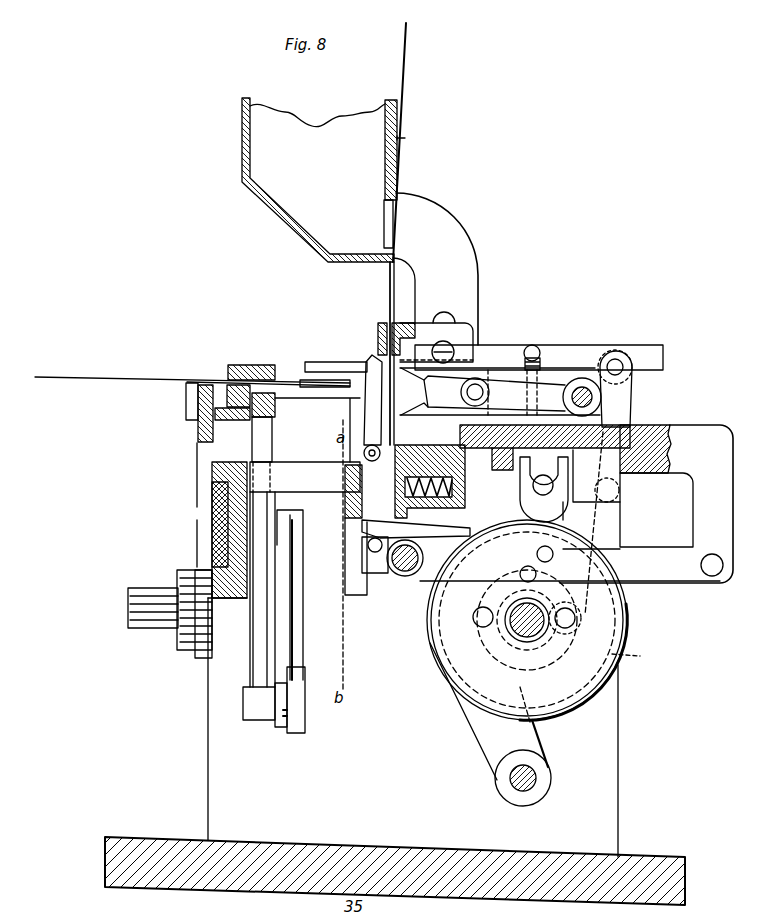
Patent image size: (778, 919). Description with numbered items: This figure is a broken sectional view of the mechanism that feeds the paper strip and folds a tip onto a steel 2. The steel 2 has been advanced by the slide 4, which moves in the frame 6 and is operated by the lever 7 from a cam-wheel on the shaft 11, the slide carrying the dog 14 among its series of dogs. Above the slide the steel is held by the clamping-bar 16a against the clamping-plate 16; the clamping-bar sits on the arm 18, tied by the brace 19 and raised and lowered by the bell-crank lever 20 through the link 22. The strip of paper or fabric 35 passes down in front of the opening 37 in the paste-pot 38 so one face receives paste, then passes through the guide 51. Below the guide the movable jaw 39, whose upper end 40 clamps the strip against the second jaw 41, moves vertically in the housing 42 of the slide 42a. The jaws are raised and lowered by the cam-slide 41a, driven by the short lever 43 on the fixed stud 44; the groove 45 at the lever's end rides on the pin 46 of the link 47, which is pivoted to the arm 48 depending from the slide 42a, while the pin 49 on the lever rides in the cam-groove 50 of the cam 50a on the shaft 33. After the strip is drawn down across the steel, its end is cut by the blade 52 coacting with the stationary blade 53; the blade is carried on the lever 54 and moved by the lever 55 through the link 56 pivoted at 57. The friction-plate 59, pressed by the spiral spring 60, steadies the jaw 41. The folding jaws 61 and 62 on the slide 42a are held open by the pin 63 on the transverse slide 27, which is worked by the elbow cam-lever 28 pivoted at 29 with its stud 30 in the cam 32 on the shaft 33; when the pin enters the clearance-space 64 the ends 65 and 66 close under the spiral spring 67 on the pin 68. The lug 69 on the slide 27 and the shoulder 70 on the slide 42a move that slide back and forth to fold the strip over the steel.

The steel 2 is at (145, 374).
The slide 4 is at (218, 515).
The frame 6 is at (238, 600).
The lever 7 is at (200, 540).
The shaft 11 is at (142, 595).
The dog 14 is at (190, 401).
The clamping-plate 16 is at (250, 366).
The clamping-bar 16a is at (276, 405).
The arm 18 is at (262, 442).
The brace 19 is at (250, 704).
The bell-crank lever 20 is at (283, 633).
The link 22 is at (296, 595).
The slide 27 is at (592, 452).
The elbow cam-lever 28 is at (492, 758).
The pivot 29 is at (538, 779).
The stud 30 is at (478, 626).
The cam 32 is at (598, 701).
The shaft 33 is at (520, 640).
The strip of paper or fabric 35 is at (399, 120).
The opening 37 is at (386, 230).
The paste-pot 38 is at (319, 180).
The movable jaw 39 is at (368, 418).
The upper end of movable jaw 40 is at (375, 360).
The second jaw 41 is at (389, 402).
The cam-slide 41a is at (358, 503).
The housing 42 is at (352, 540).
The slide 42a is at (662, 432).
The short lever 43 is at (393, 579).
The stud 44 is at (378, 575).
The groove 45 is at (515, 555).
The pin 46 is at (570, 553).
The link 47 is at (571, 565).
The arm 48 is at (646, 504).
The pin 49 is at (524, 576).
The cam-groove 50 is at (474, 631).
The cam 50a is at (642, 652).
The guide 51 is at (381, 322).
The blade 52 is at (320, 372).
The stationary blade 53 is at (405, 345).
The lever 54 is at (332, 376).
The lever 55 is at (306, 373).
The link 56 is at (620, 395).
The pivot 57 is at (619, 491).
The friction-plate 59 is at (410, 446).
The spiral spring 60 is at (444, 447).
The jaw 61 is at (497, 378).
The jaw 62 is at (500, 408).
The pin 63 is at (479, 386).
The clearance-space 64 is at (483, 391).
The extreme end of jaw 65 is at (418, 372).
The extreme end of jaw 66 is at (422, 393).
The spiral spring 67 is at (545, 361).
The pin 68 is at (533, 348).
The lug 69 is at (502, 466).
The shoulder 70 is at (650, 426).